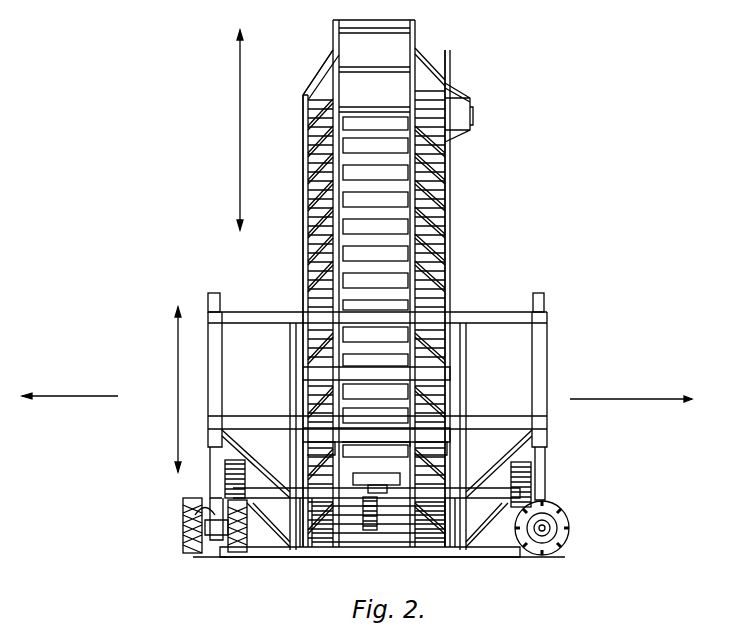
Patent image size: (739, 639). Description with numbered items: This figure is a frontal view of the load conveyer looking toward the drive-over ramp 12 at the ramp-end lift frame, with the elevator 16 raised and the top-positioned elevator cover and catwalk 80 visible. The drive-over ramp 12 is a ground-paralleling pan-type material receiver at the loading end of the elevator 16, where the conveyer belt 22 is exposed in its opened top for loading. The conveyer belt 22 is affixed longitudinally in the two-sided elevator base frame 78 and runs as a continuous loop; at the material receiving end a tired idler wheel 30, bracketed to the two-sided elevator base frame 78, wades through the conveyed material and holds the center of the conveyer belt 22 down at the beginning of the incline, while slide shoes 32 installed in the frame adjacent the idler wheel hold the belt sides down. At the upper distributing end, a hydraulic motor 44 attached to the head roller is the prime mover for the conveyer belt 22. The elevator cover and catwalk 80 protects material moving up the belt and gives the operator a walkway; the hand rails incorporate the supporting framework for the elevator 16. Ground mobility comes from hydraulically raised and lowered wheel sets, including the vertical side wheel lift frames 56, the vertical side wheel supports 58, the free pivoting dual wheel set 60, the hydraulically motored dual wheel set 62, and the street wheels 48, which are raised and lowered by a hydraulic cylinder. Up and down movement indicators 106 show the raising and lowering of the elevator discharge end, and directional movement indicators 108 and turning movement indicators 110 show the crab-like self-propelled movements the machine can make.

The drive-over ramp 12 is at (262, 557).
The elevator 16 is at (296, 92).
The conveyer belt 22 is at (320, 288).
The tired idler wheel 30 is at (372, 530).
The slide shoes 32 is at (297, 550).
The hydraulic motor 44 is at (455, 115).
The street wheels 48 is at (232, 480).
The vertical side wheel lift frames 56 is at (218, 374).
The vertical side wheel supports 58 is at (210, 293).
The free pivoting dual wheel set 60 is at (212, 553).
The hydraulically motored dual wheel set 62 is at (548, 556).
The two-sided elevator base frame 78 is at (303, 181).
The elevator cover and catwalk 80 is at (400, 241).
The up and down movement indicators 106 is at (240, 127).
The directional movement indicators 108 is at (48, 396).
The turning movement indicators 110 is at (185, 530).